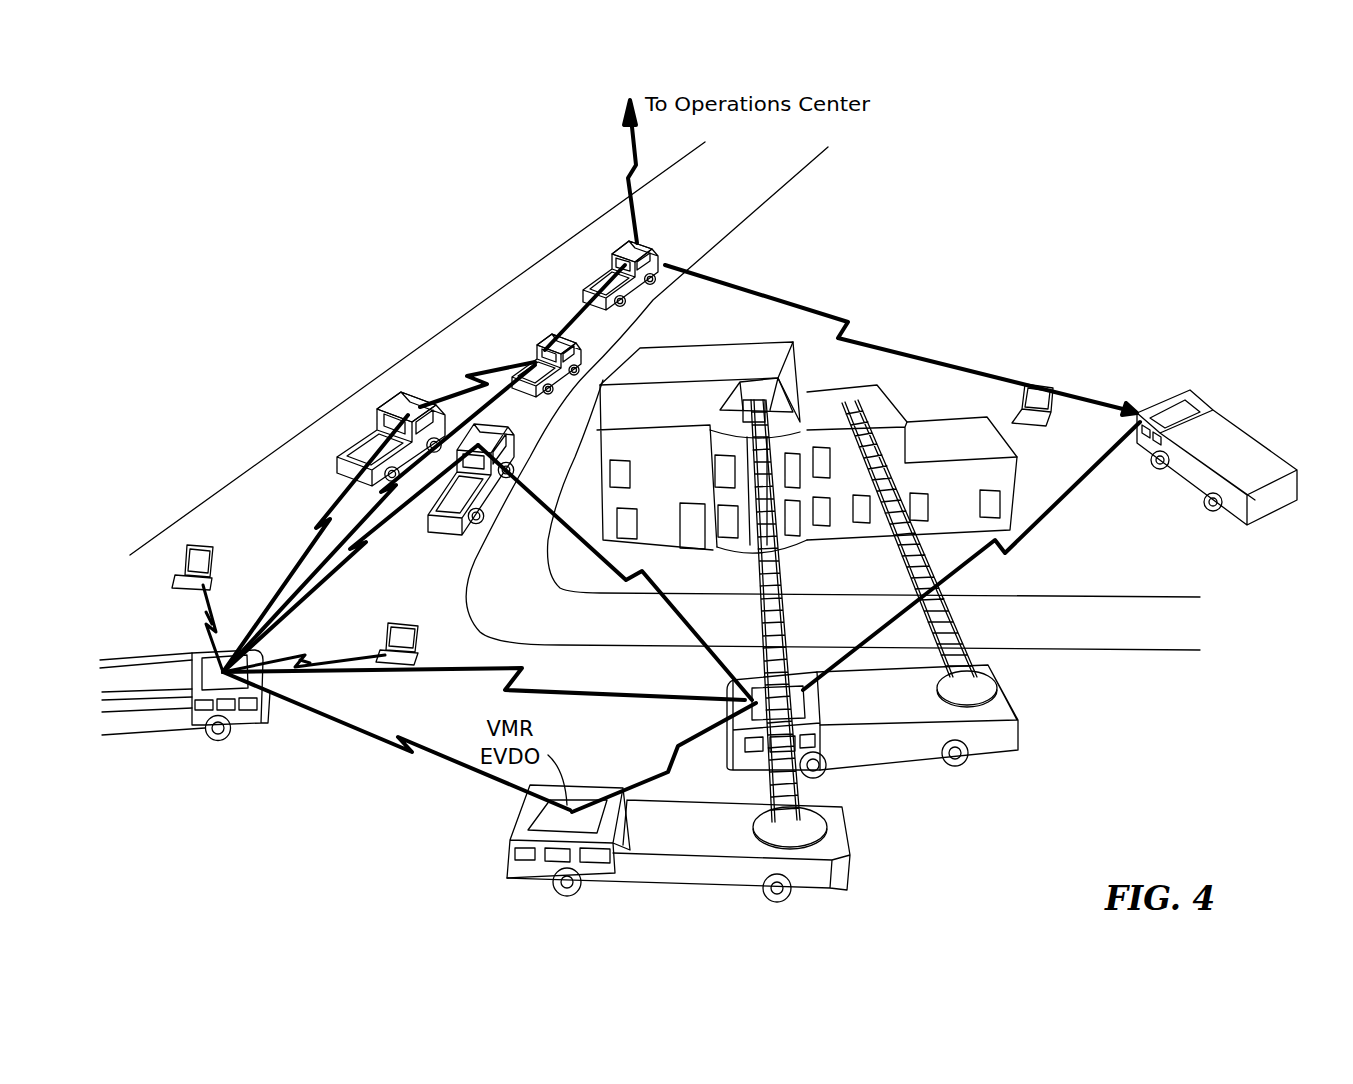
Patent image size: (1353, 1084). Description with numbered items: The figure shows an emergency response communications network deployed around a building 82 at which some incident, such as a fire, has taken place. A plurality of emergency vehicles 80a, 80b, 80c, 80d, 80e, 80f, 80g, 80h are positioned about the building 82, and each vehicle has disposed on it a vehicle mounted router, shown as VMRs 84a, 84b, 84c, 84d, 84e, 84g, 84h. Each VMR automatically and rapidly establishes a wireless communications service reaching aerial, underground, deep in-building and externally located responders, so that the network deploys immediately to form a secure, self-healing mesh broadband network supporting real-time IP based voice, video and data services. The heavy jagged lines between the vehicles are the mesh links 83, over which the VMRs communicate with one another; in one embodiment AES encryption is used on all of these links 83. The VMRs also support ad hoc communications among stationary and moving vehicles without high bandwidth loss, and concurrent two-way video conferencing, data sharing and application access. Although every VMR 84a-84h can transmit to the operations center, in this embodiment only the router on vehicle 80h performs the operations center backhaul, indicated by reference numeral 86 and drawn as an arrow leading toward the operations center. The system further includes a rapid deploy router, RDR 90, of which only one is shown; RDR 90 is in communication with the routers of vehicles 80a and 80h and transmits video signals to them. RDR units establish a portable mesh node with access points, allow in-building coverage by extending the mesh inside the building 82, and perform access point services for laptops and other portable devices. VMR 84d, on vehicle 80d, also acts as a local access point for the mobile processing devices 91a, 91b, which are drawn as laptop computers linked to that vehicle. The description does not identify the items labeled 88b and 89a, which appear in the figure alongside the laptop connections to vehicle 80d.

The emergency vehicle 80a is at (1265, 440).
The emergency vehicle 80b is at (1018, 733).
The emergency vehicle 80c is at (860, 848).
The emergency vehicle 80d is at (237, 727).
The emergency vehicle 80e is at (347, 432).
The emergency vehicle 80f is at (443, 528).
The emergency vehicle 80g is at (533, 350).
The emergency vehicle 80h is at (623, 247).
The building 82 is at (745, 350).
The links 83 is at (572, 320).
The vehicle mounted router 84a is at (1178, 395).
The vehicle mounted router 84b is at (752, 700).
The vehicle mounted router 84c is at (510, 810).
The vehicle mounted router 84d is at (218, 653).
The vehicle mounted router 84e is at (410, 397).
The vehicle mounted router 84g is at (545, 345).
The vehicle mounted router 84h is at (642, 248).
The operations center backhaul 86 is at (628, 180).
The wireless link to laptop 88b is at (213, 613).
The laptop computer 89a is at (420, 640).
The rapid deploy router 90 is at (1038, 385).
The mobile processing device 91a is at (312, 653).
The mobile processing device 91b is at (202, 545).